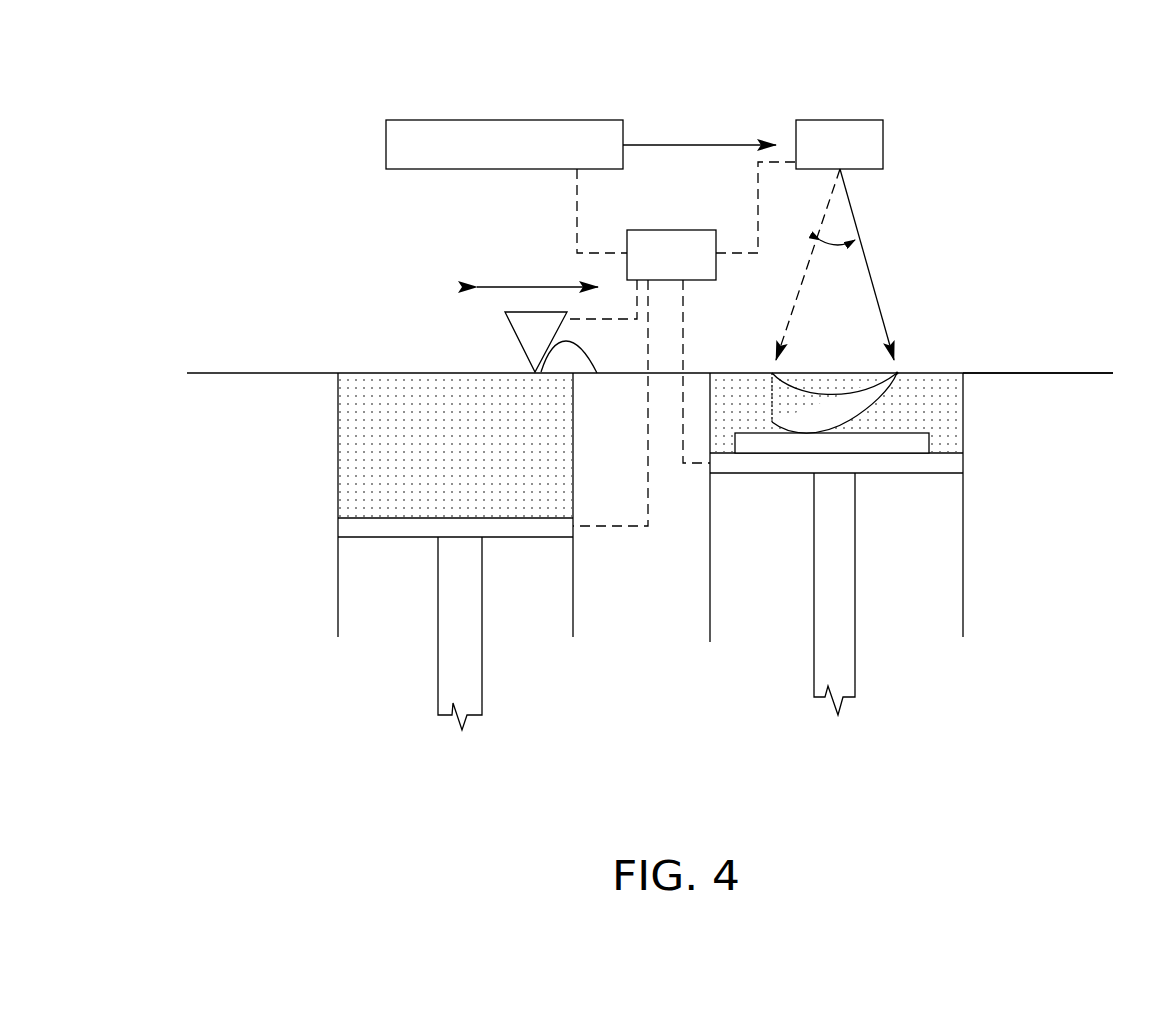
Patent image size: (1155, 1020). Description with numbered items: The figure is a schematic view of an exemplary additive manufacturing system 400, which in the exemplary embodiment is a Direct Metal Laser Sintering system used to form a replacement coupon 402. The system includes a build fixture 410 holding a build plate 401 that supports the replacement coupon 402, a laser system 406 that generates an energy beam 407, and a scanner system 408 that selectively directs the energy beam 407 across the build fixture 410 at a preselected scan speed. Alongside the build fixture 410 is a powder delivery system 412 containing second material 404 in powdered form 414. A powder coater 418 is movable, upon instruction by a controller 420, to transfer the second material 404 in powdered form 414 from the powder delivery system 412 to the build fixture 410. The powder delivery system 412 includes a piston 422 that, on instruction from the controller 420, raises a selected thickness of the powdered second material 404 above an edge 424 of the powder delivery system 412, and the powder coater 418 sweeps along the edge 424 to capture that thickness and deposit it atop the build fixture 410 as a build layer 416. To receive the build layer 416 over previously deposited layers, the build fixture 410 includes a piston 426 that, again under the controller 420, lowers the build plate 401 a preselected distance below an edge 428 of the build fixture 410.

The additive manufacturing system 400 is at (240, 170).
The build plate 401 is at (908, 443).
The replacement coupon 402 is at (787, 408).
The second material 404 is at (358, 446).
The laser system 406 is at (503, 120).
The energy beam 407 is at (684, 140).
The scanner system 408 is at (840, 120).
The build fixture 410 is at (1008, 595).
The powder delivery system 412 is at (318, 690).
The powdered form 414 is at (945, 400).
The build layer 416 is at (912, 362).
The powder coater 418 is at (515, 325).
The controller 420 is at (697, 269).
The piston 422 is at (482, 690).
The edge 424 is at (333, 356).
The piston 426 is at (856, 668).
The edge 428 is at (971, 364).